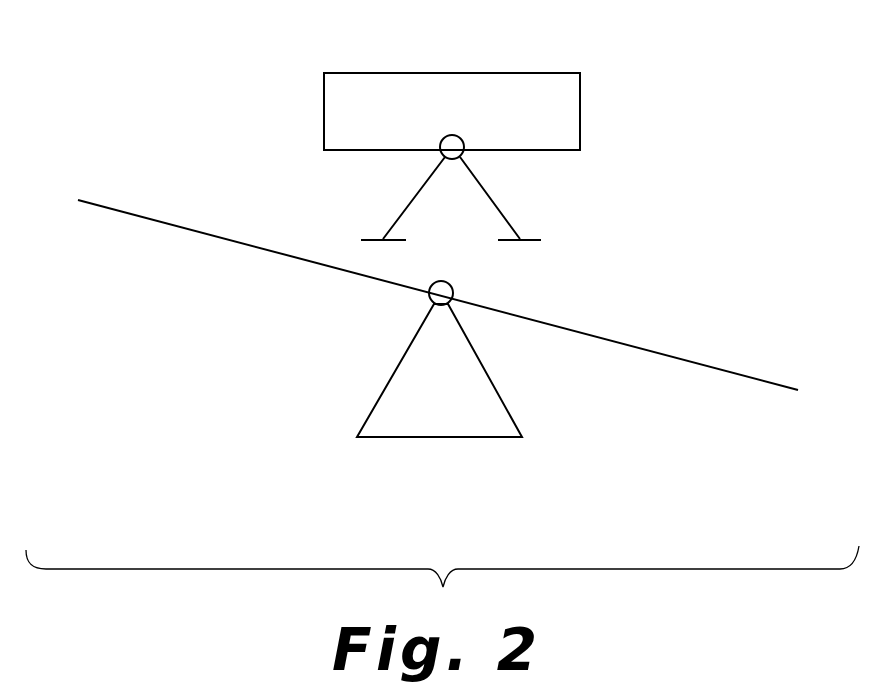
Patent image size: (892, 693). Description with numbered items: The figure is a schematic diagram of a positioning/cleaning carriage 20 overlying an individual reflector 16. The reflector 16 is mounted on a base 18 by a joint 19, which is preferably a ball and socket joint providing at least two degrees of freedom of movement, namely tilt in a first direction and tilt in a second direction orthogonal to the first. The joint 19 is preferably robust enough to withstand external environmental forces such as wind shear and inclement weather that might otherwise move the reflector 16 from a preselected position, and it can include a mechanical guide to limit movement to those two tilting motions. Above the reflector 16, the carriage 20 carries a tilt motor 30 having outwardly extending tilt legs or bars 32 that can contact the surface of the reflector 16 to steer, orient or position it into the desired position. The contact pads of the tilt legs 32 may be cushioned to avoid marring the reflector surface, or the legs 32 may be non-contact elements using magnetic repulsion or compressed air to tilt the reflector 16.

The positioning/cleaning carriage 20 is at (282, 78).
The tilt motor 30 is at (465, 135).
The tilt legs 32 is at (401, 213).
The reflector 16 is at (138, 212).
The joint 19 is at (425, 299).
The base 18 is at (515, 415).